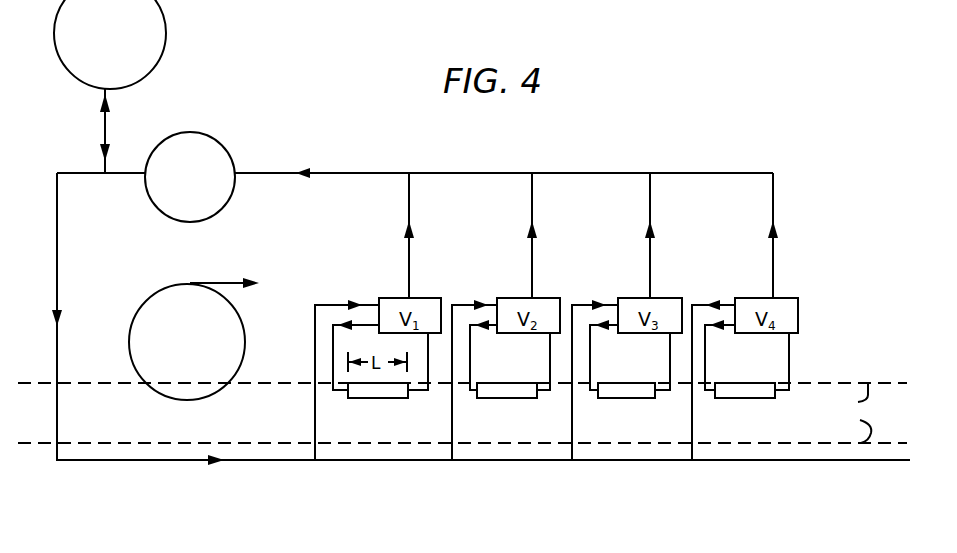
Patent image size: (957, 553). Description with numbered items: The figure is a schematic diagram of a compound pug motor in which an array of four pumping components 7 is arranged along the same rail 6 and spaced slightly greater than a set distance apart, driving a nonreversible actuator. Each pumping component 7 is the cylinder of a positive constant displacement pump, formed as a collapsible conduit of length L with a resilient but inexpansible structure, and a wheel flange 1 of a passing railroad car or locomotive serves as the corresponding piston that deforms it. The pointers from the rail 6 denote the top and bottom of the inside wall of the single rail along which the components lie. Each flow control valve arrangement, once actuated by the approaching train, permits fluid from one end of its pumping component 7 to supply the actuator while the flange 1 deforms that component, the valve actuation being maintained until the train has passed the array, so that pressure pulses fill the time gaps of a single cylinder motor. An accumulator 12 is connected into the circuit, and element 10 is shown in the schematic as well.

The accumulator 12 is at (110, 86).
The control unit 10 is at (190, 177).
The wheel flange 1 is at (194, 329).
The rail 6 is at (462, 413).
The pumping component 7 is at (561, 405).